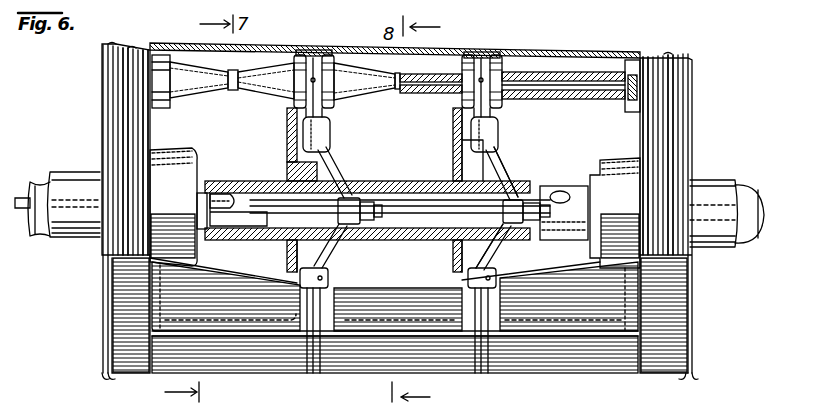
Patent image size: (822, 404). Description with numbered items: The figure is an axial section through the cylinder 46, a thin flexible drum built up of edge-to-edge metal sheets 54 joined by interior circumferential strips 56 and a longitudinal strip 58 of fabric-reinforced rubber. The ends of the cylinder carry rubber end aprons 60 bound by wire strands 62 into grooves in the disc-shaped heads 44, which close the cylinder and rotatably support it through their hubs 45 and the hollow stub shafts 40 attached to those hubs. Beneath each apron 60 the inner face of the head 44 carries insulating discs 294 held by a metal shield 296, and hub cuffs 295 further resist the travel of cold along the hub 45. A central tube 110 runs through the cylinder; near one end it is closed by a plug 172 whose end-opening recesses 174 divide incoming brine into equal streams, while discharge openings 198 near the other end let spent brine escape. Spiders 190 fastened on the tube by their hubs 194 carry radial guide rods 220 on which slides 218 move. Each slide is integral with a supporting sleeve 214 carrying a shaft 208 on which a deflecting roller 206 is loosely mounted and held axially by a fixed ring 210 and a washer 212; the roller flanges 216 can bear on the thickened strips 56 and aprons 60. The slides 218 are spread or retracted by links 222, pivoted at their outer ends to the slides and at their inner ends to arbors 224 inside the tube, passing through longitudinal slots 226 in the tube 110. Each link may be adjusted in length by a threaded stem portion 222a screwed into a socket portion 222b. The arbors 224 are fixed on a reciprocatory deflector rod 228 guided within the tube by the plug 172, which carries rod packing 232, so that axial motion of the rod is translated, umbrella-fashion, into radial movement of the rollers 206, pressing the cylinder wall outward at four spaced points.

The hollow stub shaft 40 is at (78, 172).
The disc-shaped head 44 is at (105, 82).
The hub 45 is at (194, 183).
The cylinder 46 is at (440, 380).
The sheet 54 is at (262, 372).
The interior circumferential strip 56 is at (332, 52).
The longitudinal strip 58 is at (298, 373).
The end apron 60 is at (138, 46).
The wire strand 62 is at (102, 379).
The tube 110 is at (36, 205).
The plug 172 is at (240, 193).
The end-opening recess 174 is at (225, 240).
The spider 190 is at (288, 124).
The spider hub 194 is at (272, 180).
The discharge opening 198 is at (562, 190).
The roller 206 is at (200, 88).
The shaft 208 is at (515, 99).
The fixed ring 210 is at (637, 82).
The washer 212 is at (398, 90).
The supporting sleeve 214 is at (304, 50).
The flange 216 is at (484, 52).
The slide 218 is at (330, 128).
The radial guide rod 220 is at (288, 150).
The link 222 is at (333, 155).
The threaded stem portion 222a is at (500, 178).
The socket portion 222b is at (503, 160).
The arbor 224 is at (352, 226).
The longitudinal slot 226 is at (347, 196).
The deflector rod 228 is at (24, 196).
The rod packing 232 is at (258, 243).
The insulating disc 294 is at (128, 104).
The hub cuff 295 is at (182, 155).
The metal shield 296 is at (148, 122).